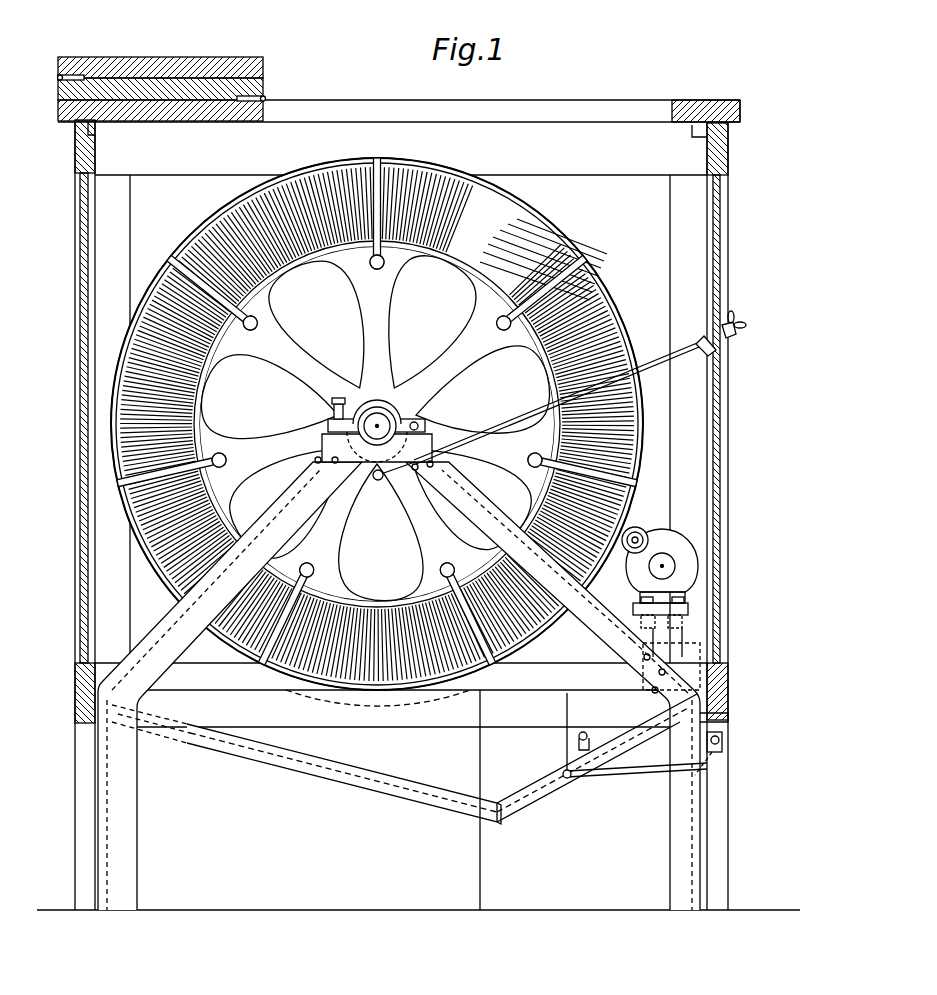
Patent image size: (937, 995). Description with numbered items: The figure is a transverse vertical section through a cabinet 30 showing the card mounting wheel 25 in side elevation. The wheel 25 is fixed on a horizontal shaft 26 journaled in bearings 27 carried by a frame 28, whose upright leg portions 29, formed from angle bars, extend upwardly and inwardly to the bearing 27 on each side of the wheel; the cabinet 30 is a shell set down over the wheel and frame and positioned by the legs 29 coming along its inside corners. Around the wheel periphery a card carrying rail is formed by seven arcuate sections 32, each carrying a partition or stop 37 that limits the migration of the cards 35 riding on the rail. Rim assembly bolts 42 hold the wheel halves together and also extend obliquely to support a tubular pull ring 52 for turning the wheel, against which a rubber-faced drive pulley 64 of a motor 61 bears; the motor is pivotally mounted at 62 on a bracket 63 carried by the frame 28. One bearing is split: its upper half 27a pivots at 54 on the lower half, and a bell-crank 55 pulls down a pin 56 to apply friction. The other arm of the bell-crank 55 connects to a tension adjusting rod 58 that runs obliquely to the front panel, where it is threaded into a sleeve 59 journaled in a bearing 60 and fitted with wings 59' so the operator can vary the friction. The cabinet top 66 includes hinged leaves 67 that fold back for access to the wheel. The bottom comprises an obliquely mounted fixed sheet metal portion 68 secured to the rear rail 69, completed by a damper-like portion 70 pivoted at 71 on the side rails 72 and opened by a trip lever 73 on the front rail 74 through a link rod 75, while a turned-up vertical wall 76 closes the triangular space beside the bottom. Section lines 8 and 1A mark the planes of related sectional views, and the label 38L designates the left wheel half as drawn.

The leaves 67 is at (128, 62).
The top 66 is at (112, 128).
The tubular pull ring 52 is at (200, 238).
The arcuate rail sections 32 is at (479, 260).
The card 35 is at (597, 290).
The partition or stop 37 is at (368, 247).
The rim assembly bolts 42 is at (256, 322).
The left fan wheel 38L is at (377, 424).
The card mounting wheel 25 is at (383, 317).
The upper bearing half 27a is at (388, 415).
The pin 56 is at (333, 410).
The horizontal shaft 26 is at (400, 407).
The pivot 54 is at (420, 424).
The bearings 27 is at (448, 445).
The bell-crank 55 is at (340, 482).
The tension adjusting rod 58 is at (650, 363).
The bearing 60 is at (733, 317).
The wings 59' is at (757, 333).
The sleeve 59 is at (740, 356).
The drive pulley 64 is at (650, 537).
The motor 61 is at (683, 558).
The bracket 63 is at (690, 612).
The pivot 62 is at (683, 622).
The cabinet 30 is at (725, 643).
The front rail 74 is at (700, 718).
The trip lever 73 is at (722, 745).
The link rod 75 is at (640, 770).
The damper-like sheet metal portion 70 is at (533, 790).
The pivot 71 is at (583, 730).
The vertical wall 76 is at (500, 747).
The side rails 72 is at (453, 710).
The fixed portion 68 is at (383, 775).
The frame 28 is at (157, 667).
The leg portions 29 is at (110, 833).
The rear rail 69 is at (107, 707).
The section line 8- 8 is at (105, 683).
The section line 1A is at (448, 932).